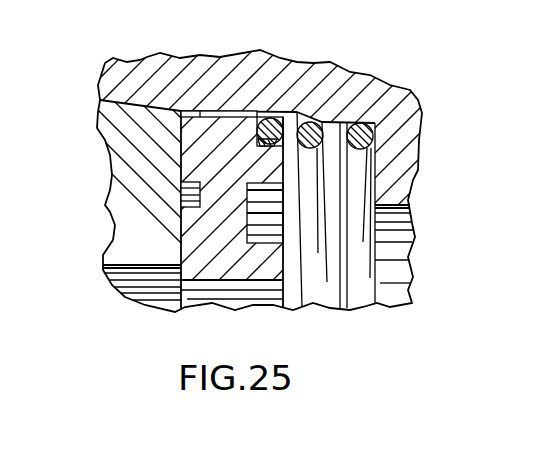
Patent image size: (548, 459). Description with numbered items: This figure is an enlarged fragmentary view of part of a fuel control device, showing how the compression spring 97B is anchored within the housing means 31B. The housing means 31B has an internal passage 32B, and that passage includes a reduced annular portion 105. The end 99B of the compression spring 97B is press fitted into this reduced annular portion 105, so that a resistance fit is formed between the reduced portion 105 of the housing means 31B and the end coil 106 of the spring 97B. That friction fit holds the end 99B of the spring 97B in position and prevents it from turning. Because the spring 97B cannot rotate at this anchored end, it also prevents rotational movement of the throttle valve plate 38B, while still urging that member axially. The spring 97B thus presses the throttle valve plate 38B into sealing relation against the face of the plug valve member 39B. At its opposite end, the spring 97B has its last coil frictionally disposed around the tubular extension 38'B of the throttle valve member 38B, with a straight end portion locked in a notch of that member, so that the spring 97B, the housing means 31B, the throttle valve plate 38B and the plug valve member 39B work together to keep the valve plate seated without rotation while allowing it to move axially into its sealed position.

The housing means 31B is at (148, 63).
The internal passage 32B is at (103, 106).
The throttle valve plate 38B is at (220, 68).
The tubular extension 38'B is at (157, 161).
The plug valve member 39B is at (120, 206).
The compression spring 97B is at (320, 122).
The reduced annular portion 105 is at (345, 124).
The end coil 106 is at (273, 120).
The end of spring 99B is at (363, 296).